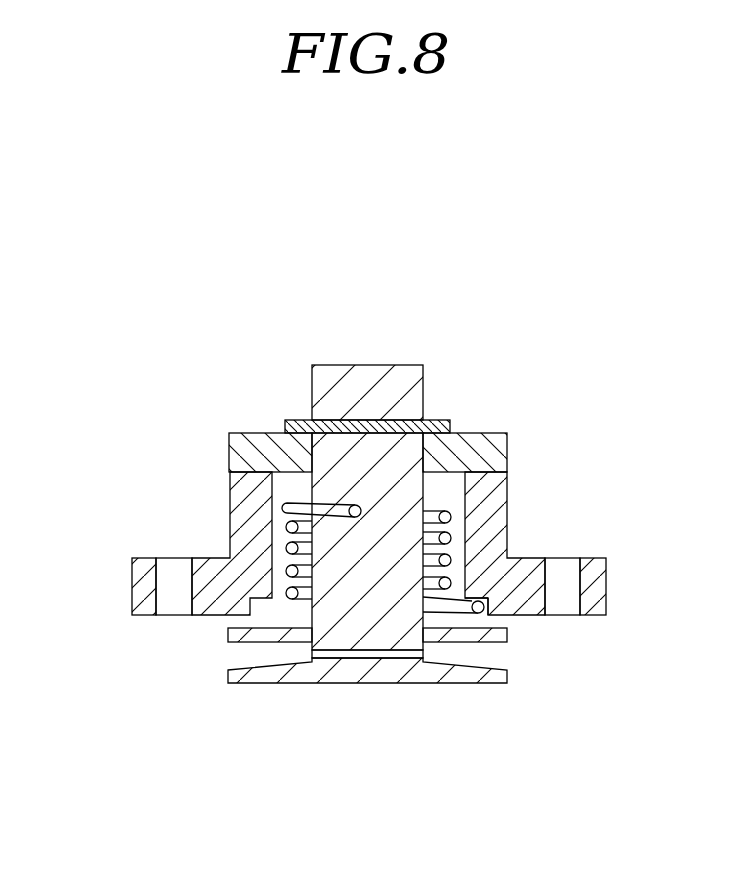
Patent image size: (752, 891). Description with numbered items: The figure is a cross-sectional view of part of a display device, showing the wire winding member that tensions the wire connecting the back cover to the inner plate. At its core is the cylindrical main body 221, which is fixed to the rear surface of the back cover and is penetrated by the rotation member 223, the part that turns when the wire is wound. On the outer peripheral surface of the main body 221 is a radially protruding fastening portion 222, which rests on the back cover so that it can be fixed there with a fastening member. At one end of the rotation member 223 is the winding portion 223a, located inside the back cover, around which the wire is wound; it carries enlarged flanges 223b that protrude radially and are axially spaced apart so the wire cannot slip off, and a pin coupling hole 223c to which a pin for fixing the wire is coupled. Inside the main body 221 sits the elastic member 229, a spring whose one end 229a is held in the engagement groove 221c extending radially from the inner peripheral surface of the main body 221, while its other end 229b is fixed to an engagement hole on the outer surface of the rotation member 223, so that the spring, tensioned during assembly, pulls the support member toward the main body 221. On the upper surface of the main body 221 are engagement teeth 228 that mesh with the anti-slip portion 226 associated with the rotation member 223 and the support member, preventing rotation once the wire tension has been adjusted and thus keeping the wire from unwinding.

The main body 221 is at (243, 501).
The engagement groove 221c is at (492, 603).
The fastening portion 222 is at (143, 570).
The rotation member 223 is at (333, 372).
The winding portion 223a is at (547, 666).
The enlarged flanges 223b is at (237, 632).
The pin coupling hole 223c is at (352, 658).
The anti-slip portion 226 is at (473, 472).
The engagement teeth 228 is at (496, 478).
The elastic member 229 is at (446, 538).
The one end of elastic member 229a is at (480, 614).
The other end of elastic member 229b is at (338, 500).